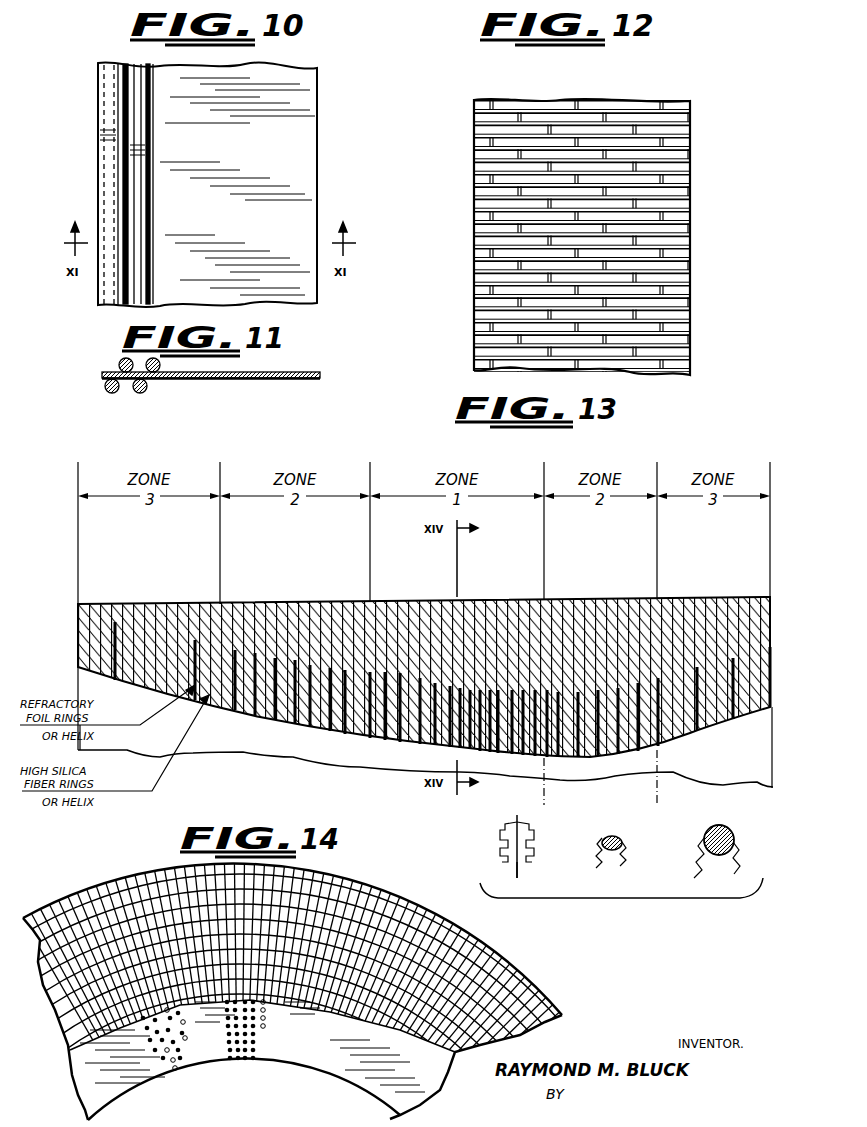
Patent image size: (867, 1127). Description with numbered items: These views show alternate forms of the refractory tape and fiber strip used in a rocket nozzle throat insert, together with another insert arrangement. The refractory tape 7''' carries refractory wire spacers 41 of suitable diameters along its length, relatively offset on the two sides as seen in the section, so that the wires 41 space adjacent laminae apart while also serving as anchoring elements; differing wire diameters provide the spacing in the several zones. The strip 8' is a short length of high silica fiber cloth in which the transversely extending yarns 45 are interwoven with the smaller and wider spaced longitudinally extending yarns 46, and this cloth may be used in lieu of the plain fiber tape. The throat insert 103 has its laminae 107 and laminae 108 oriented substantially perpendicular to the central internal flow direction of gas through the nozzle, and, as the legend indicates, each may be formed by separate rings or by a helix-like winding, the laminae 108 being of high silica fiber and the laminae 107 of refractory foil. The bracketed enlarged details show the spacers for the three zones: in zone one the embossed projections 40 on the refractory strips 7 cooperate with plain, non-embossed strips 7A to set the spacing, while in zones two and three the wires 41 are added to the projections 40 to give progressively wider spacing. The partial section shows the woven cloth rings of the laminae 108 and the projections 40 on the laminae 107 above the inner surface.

In FIG. 10, the refractory tape 7''' is at (219, 184).
In FIG. 11, the refractory tape 7''' is at (223, 362).
In FIG. 10, the refractory wire spacers 41 is at (122, 150).
In FIG. 11, the refractory wire spacers 41 is at (119, 366).
In FIG. 13, the refractory wire spacers 41 is at (612, 868).
In FIG. 12, the strip of ablation resistant fibers 8' is at (599, 237).
In FIG. 12, the longitudinally extending yarns 46 is at (664, 117).
In FIG. 12, the transversely extending yarns 45 is at (690, 230).
In FIG. 13, the throat insert 103 is at (488, 600).
In FIG. 14, the throat insert 103 is at (398, 890).
In FIG. 13, the laminae 108 is at (283, 727).
In FIG. 14, the laminae 108 is at (462, 930).
In FIG. 13, the laminae 107 is at (370, 741).
In FIG. 14, the laminae 107 is at (279, 1064).
In FIG. 13, the refractory strip 7 is at (619, 836).
In FIG. 13, the plain refractory strips 7A is at (522, 876).
In FIG. 13, the projections 40 is at (500, 840).
In FIG. 14, the projections 40 is at (266, 1021).